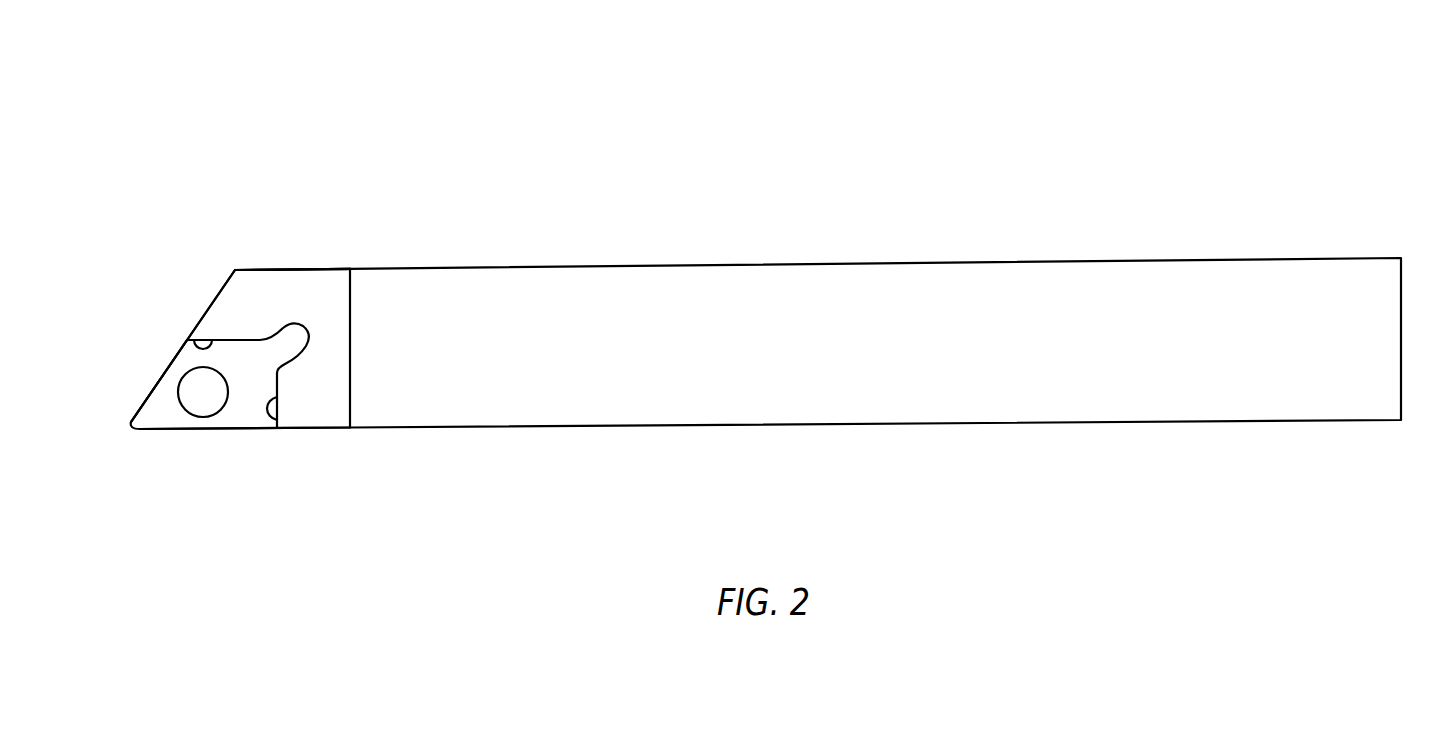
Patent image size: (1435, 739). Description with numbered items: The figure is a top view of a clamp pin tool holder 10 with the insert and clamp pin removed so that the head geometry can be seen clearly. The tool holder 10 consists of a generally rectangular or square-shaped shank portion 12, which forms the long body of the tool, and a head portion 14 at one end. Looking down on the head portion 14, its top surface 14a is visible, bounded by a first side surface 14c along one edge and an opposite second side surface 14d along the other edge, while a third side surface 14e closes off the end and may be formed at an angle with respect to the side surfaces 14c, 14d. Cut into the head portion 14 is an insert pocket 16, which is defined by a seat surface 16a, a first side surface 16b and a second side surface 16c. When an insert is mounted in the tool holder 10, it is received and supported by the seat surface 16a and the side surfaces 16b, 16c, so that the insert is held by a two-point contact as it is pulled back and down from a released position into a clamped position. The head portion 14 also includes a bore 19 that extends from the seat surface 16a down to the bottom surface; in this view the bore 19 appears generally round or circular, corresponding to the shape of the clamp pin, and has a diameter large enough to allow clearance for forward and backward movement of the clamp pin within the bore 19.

The clamp pin tool holder 10 is at (951, 104).
The shank portion 12 is at (1193, 244).
The head portion 14 is at (334, 254).
The top surface 14a is at (268, 283).
The first side surface 14c is at (292, 268).
The second side surface 14d is at (335, 430).
The third side surface 14e is at (225, 280).
The insert pocket 16 is at (122, 410).
The seat surface 16a is at (165, 402).
The first side surface 16b is at (190, 340).
The second side surface 16c is at (274, 414).
The bore 19 is at (203, 400).